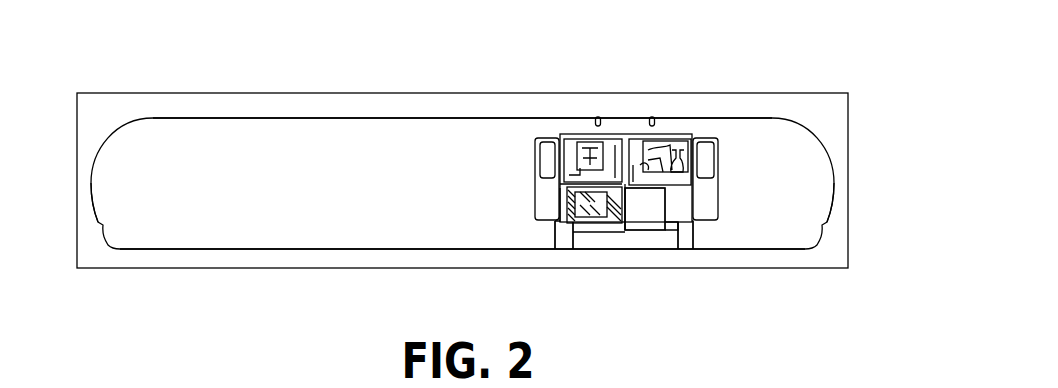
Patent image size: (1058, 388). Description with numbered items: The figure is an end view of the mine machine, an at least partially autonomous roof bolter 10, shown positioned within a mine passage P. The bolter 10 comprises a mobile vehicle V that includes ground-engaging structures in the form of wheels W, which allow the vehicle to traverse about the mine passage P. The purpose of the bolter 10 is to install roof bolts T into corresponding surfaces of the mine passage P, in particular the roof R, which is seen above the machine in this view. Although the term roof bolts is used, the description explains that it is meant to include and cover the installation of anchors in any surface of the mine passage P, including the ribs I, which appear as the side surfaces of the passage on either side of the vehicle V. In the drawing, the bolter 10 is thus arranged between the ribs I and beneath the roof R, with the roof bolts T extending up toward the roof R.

The roof bolter 10 is at (758, 163).
The roof R is at (462, 118).
The mine passage P is at (462, 183).
The ribs I is at (91, 182).
The roof bolts T is at (598, 118).
The mobile vehicle V is at (640, 222).
The wheels W is at (570, 249).